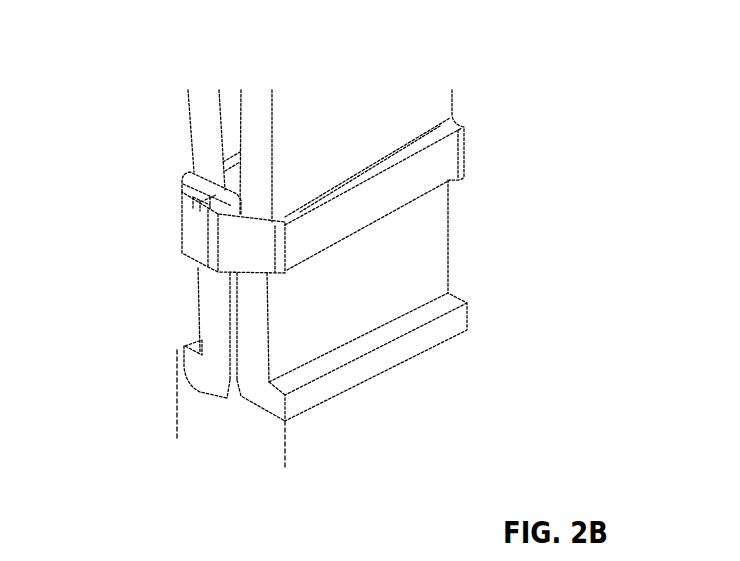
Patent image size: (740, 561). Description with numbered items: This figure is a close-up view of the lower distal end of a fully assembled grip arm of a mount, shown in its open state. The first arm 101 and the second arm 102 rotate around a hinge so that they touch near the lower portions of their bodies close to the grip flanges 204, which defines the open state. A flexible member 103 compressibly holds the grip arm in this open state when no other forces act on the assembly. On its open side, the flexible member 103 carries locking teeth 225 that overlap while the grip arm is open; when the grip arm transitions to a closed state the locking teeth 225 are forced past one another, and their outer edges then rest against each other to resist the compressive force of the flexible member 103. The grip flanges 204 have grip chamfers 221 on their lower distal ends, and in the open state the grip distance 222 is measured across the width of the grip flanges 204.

The first arm 101 is at (175, 128).
The second arm 102 is at (428, 88).
The flexible member 103 is at (435, 155).
The grip flanges 204 is at (445, 370).
The grip chamfers 221 is at (175, 370).
The grip distance 222 is at (270, 438).
The locking teeth 225 is at (167, 212).